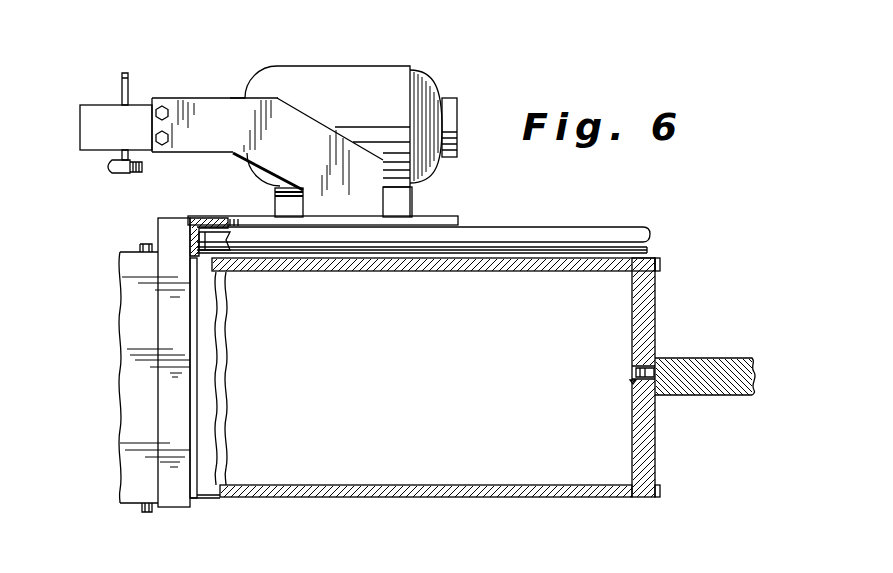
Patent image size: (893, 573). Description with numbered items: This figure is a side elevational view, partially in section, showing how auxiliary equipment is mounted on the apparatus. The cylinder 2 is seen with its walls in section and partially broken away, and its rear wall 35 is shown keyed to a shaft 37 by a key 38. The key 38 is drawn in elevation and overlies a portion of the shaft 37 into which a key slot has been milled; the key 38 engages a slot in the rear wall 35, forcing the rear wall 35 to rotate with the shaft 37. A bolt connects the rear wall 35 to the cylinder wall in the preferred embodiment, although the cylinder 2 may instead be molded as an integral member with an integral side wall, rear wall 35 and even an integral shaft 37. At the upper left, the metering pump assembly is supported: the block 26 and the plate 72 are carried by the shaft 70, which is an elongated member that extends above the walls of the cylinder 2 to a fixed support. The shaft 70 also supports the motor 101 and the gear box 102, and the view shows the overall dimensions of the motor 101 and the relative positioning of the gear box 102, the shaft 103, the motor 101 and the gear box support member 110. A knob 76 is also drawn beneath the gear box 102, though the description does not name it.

The cylinder 2 is at (668, 460).
The block 26 is at (138, 478).
The rear wall 35 is at (648, 352).
The shaft 37 is at (717, 362).
The key 38 is at (632, 371).
The shaft 70 is at (597, 233).
The plate 72 is at (178, 497).
The knob 76 is at (110, 167).
The motor 101 is at (393, 80).
The gear box 102 is at (95, 137).
The shaft 103 is at (128, 83).
The gear box support member 110 is at (203, 108).